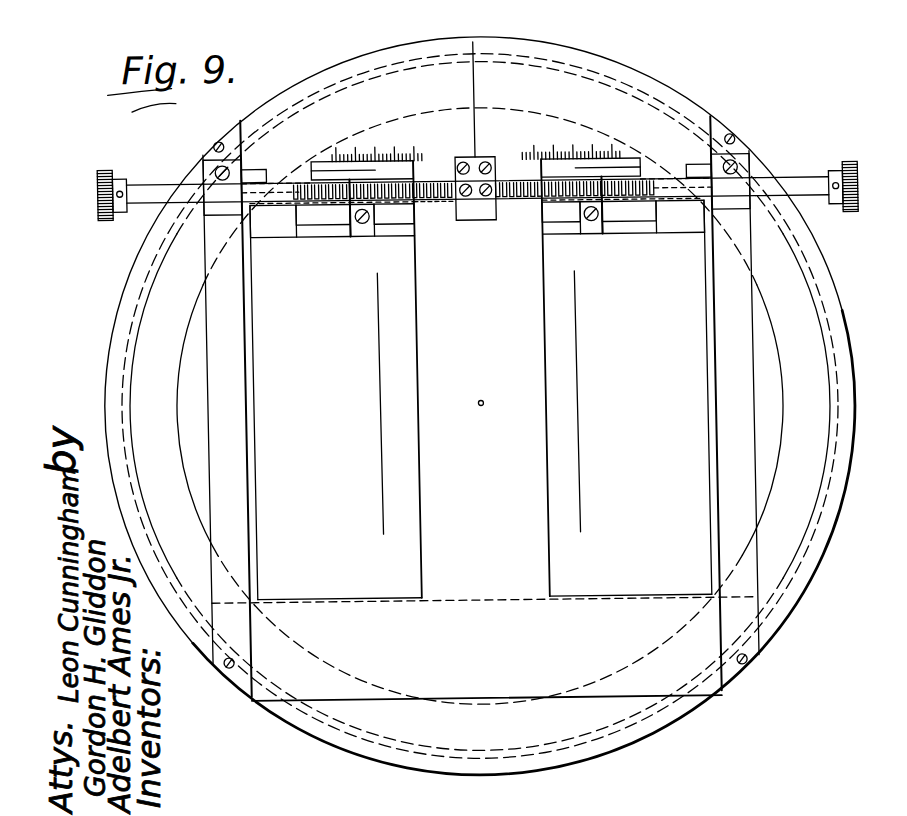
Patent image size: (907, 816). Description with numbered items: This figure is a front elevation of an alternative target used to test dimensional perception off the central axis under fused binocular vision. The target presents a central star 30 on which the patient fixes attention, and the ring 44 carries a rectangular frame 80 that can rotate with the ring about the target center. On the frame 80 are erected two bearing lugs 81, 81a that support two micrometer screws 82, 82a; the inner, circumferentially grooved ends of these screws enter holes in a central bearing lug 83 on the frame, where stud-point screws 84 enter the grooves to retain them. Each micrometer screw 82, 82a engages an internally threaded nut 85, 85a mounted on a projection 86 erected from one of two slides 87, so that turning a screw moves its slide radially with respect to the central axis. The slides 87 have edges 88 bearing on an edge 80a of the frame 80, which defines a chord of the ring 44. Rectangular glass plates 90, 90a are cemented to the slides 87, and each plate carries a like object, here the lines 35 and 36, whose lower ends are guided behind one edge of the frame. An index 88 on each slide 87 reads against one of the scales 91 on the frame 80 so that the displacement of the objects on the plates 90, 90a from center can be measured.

The central star 30 is at (482, 409).
The line 35 is at (379, 472).
The line 36 is at (579, 474).
The ring 44 is at (853, 468).
The rectangular frame 80 is at (263, 141).
The edge of the frame 80a is at (445, 205).
The bearing lug 81 is at (208, 174).
The bearing lug 81a is at (754, 160).
The micrometer screw 82 is at (152, 193).
The micrometer screw 82a is at (810, 181).
The bearing lug 83 is at (485, 211).
The stud-point screws 84 is at (490, 161).
The internally threaded nut 85 is at (340, 208).
The internally threaded nut 85a is at (612, 212).
The projection 86 is at (363, 222).
The slide 87 is at (401, 212).
The edge (index) 88 is at (314, 160).
The rectangular glass plate 90 is at (407, 560).
The rectangular glass plate 90a is at (562, 543).
The scale 91 is at (435, 152).